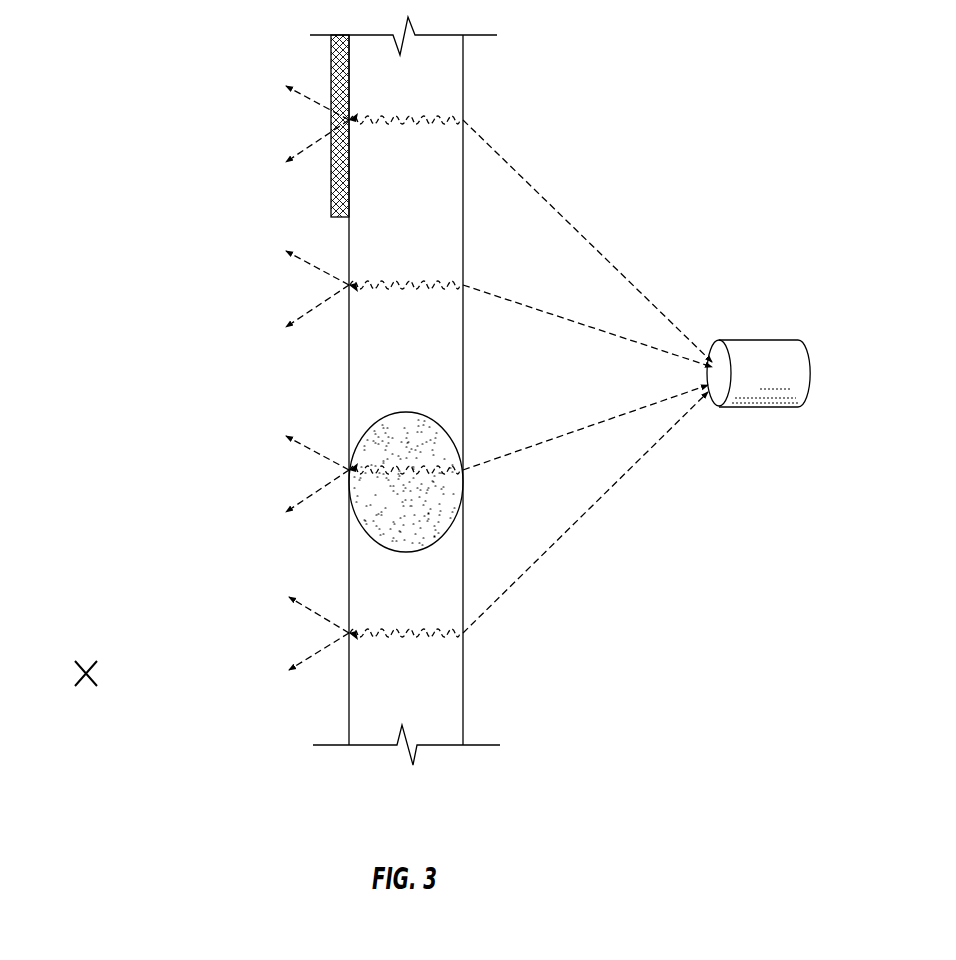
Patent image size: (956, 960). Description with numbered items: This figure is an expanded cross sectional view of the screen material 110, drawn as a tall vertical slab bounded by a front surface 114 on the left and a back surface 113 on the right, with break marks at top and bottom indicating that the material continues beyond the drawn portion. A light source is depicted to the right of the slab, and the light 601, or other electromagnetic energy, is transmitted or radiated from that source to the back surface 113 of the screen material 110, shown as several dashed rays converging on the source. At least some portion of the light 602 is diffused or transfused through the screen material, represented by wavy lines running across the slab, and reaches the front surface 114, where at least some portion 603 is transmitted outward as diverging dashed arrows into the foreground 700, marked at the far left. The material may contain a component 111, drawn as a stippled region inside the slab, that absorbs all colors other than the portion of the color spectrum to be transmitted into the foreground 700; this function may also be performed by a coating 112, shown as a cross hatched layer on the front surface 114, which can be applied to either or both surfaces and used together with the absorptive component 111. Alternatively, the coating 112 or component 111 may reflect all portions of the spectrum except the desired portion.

The screen material 110 is at (424, 197).
The absorptive component 111 is at (387, 533).
The coating 112 is at (332, 187).
The back surface 113 is at (463, 82).
The front surface 114 is at (338, 365).
The light 601 is at (568, 527).
The diffused light 602 is at (424, 643).
The transmitted light portion 603 is at (317, 652).
The foreground 700 is at (96, 671).